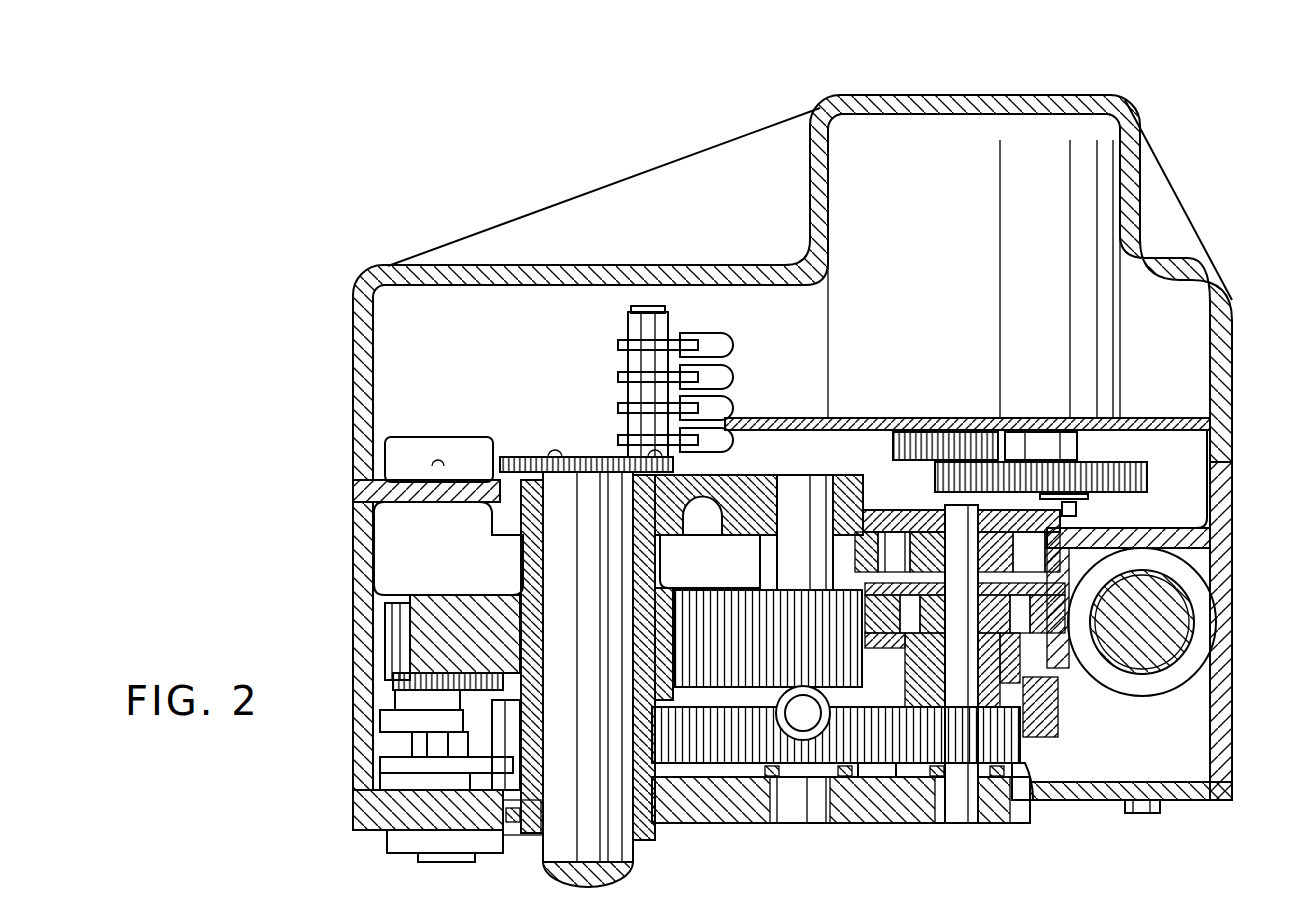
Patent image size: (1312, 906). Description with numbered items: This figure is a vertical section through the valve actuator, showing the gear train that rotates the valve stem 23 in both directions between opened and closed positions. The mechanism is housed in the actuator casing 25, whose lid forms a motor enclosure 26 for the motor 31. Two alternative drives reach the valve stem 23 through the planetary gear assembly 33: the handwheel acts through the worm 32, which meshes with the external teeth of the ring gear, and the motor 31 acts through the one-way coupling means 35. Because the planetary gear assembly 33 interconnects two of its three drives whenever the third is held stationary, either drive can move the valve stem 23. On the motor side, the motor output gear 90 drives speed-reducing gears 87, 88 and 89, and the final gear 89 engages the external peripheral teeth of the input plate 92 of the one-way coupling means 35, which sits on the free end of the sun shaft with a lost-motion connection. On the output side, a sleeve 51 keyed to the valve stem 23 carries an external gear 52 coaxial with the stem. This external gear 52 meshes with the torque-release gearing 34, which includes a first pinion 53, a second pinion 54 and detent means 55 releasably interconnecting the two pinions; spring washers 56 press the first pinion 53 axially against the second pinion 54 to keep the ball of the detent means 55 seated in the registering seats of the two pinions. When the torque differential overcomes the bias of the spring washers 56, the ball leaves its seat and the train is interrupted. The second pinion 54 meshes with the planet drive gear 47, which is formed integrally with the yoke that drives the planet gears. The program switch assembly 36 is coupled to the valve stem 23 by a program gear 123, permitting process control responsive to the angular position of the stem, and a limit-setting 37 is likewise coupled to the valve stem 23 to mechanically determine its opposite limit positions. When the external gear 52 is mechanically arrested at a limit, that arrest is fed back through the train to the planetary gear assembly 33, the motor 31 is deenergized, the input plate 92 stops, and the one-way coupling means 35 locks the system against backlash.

The valve stem 23 is at (635, 847).
The actuator casing 25 is at (1232, 505).
The motor enclosure 26 is at (352, 352).
The motor 31 is at (927, 266).
The worm 32 is at (1182, 628).
The planetary gear assembly 33 is at (1040, 672).
The torque-release gearing 34 is at (873, 768).
The one-way coupling means 35 is at (918, 497).
The program switch assembly 36 is at (628, 392).
The limit-setting 37 is at (384, 677).
The planet drive gear 47 is at (1032, 792).
The sleeve 51 is at (541, 838).
The external gear 52 is at (432, 607).
The first pinion 53 is at (772, 602).
The second pinion 54 is at (725, 748).
The detent means 55 is at (800, 748).
The spring washers 56 is at (770, 568).
The speed-reducing gear 87 is at (913, 432).
The speed-reducing gear 88 is at (1108, 462).
The final gear 89 is at (1088, 502).
The motor output gear 90 is at (973, 432).
The input plate 92 is at (1076, 517).
The program gear 123 is at (518, 458).